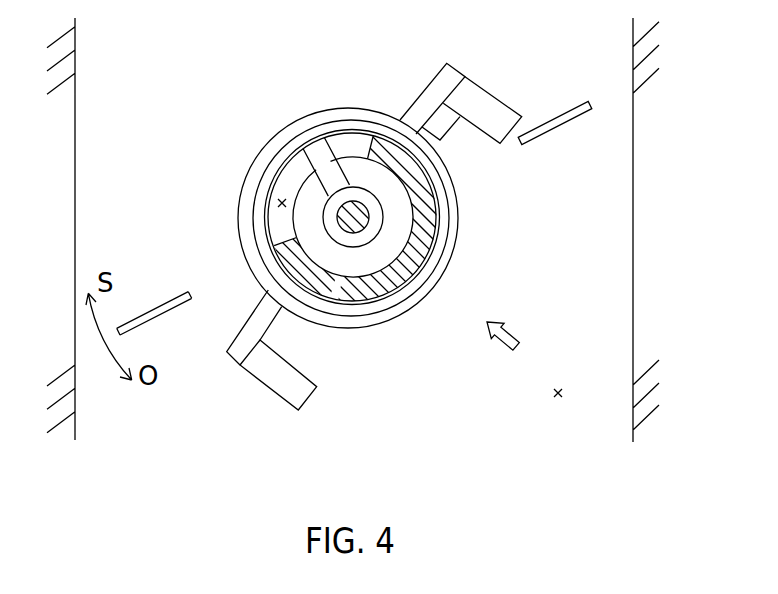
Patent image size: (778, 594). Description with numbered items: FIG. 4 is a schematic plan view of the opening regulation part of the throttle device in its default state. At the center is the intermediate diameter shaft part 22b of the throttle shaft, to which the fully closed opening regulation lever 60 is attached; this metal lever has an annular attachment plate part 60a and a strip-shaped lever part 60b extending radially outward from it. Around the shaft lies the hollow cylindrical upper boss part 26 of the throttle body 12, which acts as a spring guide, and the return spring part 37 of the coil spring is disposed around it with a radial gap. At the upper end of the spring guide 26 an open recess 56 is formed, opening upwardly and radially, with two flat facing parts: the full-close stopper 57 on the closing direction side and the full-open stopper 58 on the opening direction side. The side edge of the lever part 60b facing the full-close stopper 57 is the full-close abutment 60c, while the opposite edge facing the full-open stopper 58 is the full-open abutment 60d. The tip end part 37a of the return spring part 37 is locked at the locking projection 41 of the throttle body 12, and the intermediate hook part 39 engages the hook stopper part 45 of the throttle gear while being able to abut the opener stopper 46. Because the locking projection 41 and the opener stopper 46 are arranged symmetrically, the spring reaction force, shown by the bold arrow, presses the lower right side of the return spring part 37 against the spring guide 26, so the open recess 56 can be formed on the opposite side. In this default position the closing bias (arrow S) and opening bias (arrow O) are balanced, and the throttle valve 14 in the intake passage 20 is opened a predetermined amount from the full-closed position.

The throttle body 12 is at (656, 434).
The throttle valve 14 is at (552, 127).
The intake passage 20 is at (558, 398).
The intermediate diameter shaft part 22b is at (362, 220).
The upper boss part (spring guide) 26 is at (428, 265).
The return spring part 37 is at (395, 302).
The tip end part 37a is at (236, 352).
The intermediate hook part 39 is at (438, 85).
The locking projection 41 is at (282, 392).
The hook stopper part 45 is at (445, 123).
The opener stopper 46 is at (503, 113).
The open recess 56 is at (280, 202).
The full-close stopper 57 is at (366, 142).
The full-open stopper 58 is at (284, 238).
The fully closed opening regulation lever 60 is at (352, 265).
The attachment plate part 60a is at (372, 200).
The lever part 60b is at (322, 152).
The full-close abutment 60c is at (346, 136).
The full-open abutment 60d is at (308, 163).